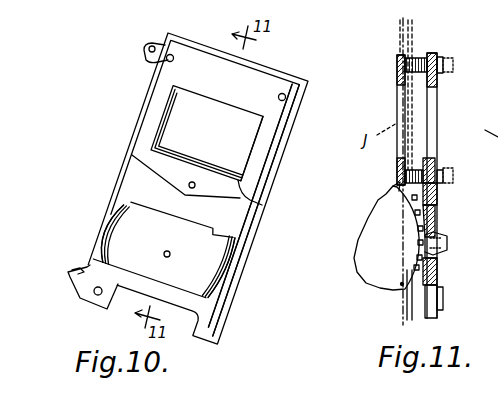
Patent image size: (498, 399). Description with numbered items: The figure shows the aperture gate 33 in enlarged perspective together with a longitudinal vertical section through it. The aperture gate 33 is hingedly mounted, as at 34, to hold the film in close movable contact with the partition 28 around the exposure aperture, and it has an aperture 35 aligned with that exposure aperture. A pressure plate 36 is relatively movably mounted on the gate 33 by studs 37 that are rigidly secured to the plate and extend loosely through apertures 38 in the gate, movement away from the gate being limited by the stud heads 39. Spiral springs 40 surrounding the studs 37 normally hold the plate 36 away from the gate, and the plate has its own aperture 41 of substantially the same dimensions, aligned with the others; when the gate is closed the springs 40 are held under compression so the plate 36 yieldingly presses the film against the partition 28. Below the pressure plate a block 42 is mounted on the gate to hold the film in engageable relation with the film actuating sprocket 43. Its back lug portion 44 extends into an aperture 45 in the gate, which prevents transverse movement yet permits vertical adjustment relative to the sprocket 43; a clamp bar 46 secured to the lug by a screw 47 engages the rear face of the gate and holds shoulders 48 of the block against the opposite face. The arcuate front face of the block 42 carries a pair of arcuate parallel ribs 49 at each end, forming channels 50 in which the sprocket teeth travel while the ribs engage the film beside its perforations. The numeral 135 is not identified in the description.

In FIG. 11, the partition 28 is at (400, 40).
In FIG. 10, the aperture gate 33 is at (245, 227).
In FIG. 11, the aperture gate 33 is at (436, 82).
In FIG. 10, the hinge mounting 34 is at (143, 54).
In FIG. 10, the aperture 35 is at (172, 115).
In FIG. 11, the aperture 35 is at (432, 160).
In FIG. 10, the pressure plate 36 is at (257, 163).
In FIG. 11, the pressure plate 36 is at (397, 75).
In FIG. 10, the studs 37 is at (172, 55).
In FIG. 11, the studs 37 is at (446, 56).
In FIG. 11, the apertures 38 is at (440, 57).
In FIG. 11, the stud heads 39 is at (446, 70).
In FIG. 11, the spiral springs 40 is at (418, 58).
In FIG. 10, the aperture 41 is at (266, 215).
In FIG. 11, the aperture 41 is at (397, 95).
In FIG. 11, the block 42 is at (440, 270).
In FIG. 11, the film actuating sprocket 43 is at (400, 290).
In FIG. 11, the back lug portion 44 is at (440, 232).
In FIG. 10, the aperture 45 is at (262, 204).
In FIG. 11, the aperture 45 is at (436, 215).
In FIG. 11, the clamp bar 46 is at (440, 258).
In FIG. 11, the screw 47 is at (447, 243).
In FIG. 10, the shoulders 48 is at (250, 248).
In FIG. 10, the arcuate parallel ribs 49 is at (120, 232).
In FIG. 10, the channels 50 is at (122, 222).
In FIG. 11, the shaft portion 135 is at (486, 123).